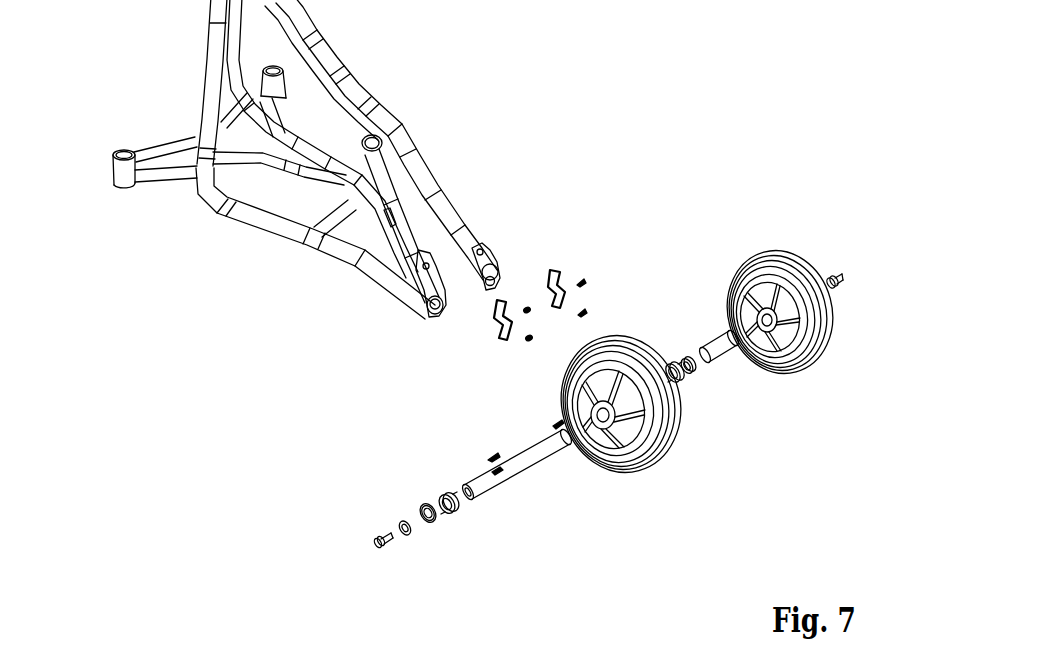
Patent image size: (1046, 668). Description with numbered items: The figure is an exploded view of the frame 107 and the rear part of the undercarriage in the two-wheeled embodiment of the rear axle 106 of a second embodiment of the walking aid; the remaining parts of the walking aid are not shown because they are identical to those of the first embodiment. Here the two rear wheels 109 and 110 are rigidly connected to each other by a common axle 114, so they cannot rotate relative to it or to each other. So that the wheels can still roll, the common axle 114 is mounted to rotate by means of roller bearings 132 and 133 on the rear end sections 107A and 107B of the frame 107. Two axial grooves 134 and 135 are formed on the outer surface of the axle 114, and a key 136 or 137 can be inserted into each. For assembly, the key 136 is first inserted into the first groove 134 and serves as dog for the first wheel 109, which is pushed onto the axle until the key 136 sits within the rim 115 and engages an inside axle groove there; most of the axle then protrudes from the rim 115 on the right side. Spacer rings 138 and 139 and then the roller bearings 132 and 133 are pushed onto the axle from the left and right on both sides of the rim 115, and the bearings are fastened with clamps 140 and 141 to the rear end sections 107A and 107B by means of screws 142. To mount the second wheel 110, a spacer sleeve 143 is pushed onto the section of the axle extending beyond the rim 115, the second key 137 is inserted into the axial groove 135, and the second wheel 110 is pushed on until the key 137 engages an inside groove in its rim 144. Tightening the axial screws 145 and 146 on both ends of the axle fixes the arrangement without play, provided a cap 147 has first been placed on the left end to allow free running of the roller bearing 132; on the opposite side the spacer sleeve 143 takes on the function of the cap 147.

The rear axle 106 is at (674, 176).
The frame 107 is at (413, 157).
The rear end section of frame 107A is at (427, 275).
The rear end section of frame 107B is at (483, 255).
The first wheel 109 is at (660, 452).
The second wheel 110 is at (768, 253).
The common axle 114 is at (525, 455).
The rim of first wheel 115 is at (583, 393).
The roller bearing 132 is at (435, 518).
The roller bearing 133 is at (693, 373).
The axial groove 134 is at (493, 470).
The axial groove 135 is at (557, 443).
The key 136 is at (495, 457).
The key 137 is at (555, 422).
The spacer ring 138 is at (447, 497).
The spacer ring 139 is at (677, 381).
The clamp 140 is at (503, 328).
The clamp 141 is at (560, 271).
The screws 142 is at (584, 311).
The spacer sleeve 143 is at (730, 343).
The rim of second wheel 144 is at (740, 260).
The axial screw 145 is at (373, 540).
The axial screw 146 is at (832, 262).
The cap 147 is at (397, 520).